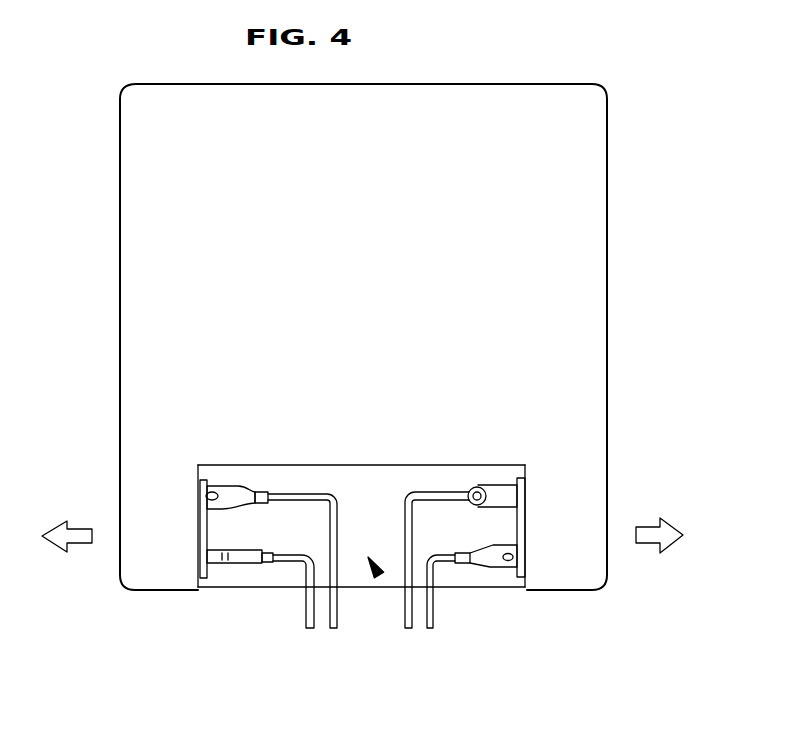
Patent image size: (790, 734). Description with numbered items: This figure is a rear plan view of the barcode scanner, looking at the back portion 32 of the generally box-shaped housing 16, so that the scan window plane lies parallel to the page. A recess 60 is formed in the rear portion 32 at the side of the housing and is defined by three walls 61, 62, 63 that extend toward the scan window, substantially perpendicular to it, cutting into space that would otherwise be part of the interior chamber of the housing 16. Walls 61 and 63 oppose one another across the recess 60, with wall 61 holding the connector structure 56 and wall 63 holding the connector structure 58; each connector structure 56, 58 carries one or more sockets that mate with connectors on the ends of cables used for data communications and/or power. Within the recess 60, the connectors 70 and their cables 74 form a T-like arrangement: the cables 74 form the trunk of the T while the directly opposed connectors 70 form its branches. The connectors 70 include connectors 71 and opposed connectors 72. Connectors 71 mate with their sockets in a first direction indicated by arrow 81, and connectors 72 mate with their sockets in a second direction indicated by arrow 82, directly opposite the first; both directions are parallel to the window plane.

The housing 16 is at (473, 83).
The back portion 32 is at (386, 316).
The connector structure 56 is at (199, 508).
The connector structure 58 is at (525, 506).
The recess 60 is at (379, 575).
The wall 61 is at (197, 532).
The wall 62 is at (357, 561).
The wall 63 is at (526, 532).
The connectors 70 is at (233, 493).
The connectors 71 is at (250, 499).
The opposed connectors 72 is at (490, 547).
The cables 74 is at (330, 630).
The arrow 81 is at (78, 545).
The arrow 82 is at (648, 543).